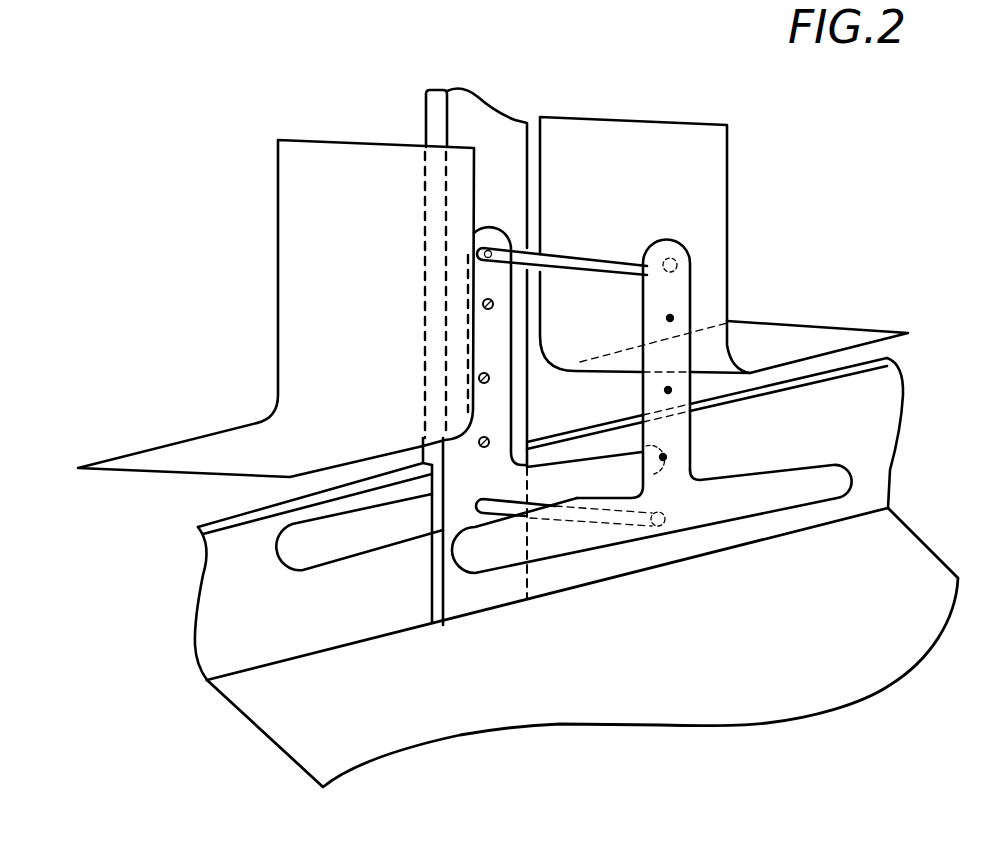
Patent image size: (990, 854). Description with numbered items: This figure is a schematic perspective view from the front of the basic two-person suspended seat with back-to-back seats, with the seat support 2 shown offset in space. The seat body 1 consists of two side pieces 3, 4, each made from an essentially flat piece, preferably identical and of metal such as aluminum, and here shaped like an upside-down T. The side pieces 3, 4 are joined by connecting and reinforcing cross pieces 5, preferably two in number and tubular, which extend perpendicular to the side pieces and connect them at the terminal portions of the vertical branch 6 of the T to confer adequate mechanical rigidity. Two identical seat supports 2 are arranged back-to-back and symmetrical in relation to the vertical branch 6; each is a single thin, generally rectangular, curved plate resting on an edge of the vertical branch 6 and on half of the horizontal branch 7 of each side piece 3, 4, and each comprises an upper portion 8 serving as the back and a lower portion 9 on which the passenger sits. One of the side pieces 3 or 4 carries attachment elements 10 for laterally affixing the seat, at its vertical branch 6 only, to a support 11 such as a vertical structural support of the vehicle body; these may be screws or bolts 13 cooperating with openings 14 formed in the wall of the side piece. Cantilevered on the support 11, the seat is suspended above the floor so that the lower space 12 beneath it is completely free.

The seat body 1 is at (730, 565).
The seat support 2 is at (500, 288).
The side piece 3 is at (507, 546).
The side piece 4 is at (785, 518).
The connecting and reinforcing cross piece 5 is at (577, 249).
The vertical branch 6 is at (684, 291).
The horizontal branch 7 is at (335, 543).
The upper portion 8 is at (288, 192).
The lower portion 9 is at (167, 453).
The attachment elements 10 is at (484, 380).
The support 11 is at (490, 124).
The lower space 12 is at (588, 604).
The screws or bolts 13 is at (385, 653).
The openings 14 is at (488, 304).